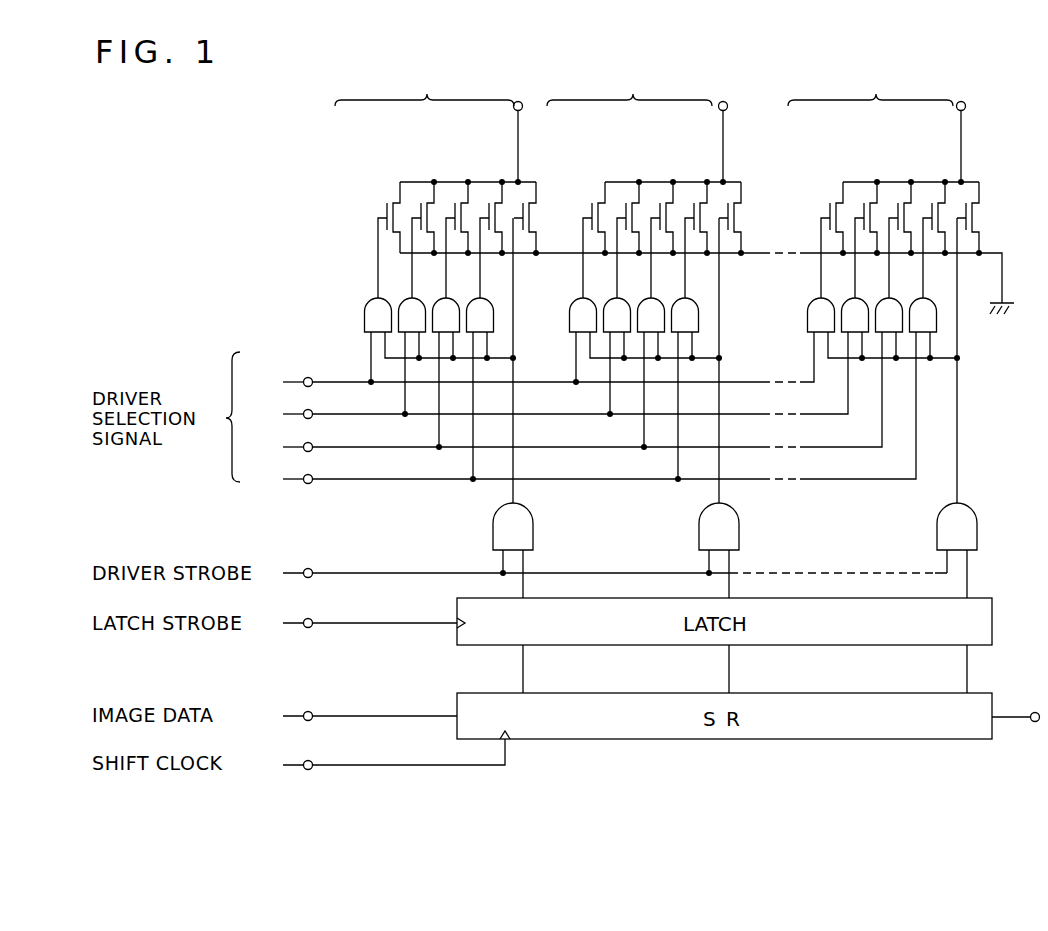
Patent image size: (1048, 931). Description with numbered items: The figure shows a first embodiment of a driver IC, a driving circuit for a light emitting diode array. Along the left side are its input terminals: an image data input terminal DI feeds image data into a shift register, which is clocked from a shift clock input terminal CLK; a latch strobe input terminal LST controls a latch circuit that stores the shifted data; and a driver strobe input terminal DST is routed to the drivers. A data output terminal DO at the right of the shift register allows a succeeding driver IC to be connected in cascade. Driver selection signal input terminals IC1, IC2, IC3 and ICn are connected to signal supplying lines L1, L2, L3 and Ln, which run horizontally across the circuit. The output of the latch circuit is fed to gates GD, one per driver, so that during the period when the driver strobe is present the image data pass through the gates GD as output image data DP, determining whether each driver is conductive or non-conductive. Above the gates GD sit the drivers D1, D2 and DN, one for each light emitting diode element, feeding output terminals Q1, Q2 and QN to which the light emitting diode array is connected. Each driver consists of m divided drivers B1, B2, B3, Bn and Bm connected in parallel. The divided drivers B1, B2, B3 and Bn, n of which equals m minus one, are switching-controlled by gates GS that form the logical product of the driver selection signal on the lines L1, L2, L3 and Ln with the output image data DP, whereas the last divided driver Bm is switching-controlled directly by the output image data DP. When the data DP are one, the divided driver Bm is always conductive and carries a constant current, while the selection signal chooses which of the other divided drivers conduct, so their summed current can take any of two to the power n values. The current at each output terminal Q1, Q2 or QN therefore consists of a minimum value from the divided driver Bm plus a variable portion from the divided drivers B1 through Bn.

The driver D1 is at (435, 124).
The driver D2 is at (644, 124).
The driver DN is at (883, 124).
The output terminal Q1 is at (519, 101).
The output terminal Q2 is at (724, 101).
The output terminal QN is at (962, 101).
The divided driver B1 is at (836, 198).
The divided driver B2 is at (870, 198).
The divided driver B3 is at (904, 198).
The divided driver Bn is at (938, 198).
The divided driver Bm is at (972, 198).
The gate GS is at (365, 316).
The gate GD is at (493, 532).
The output image data DP is at (515, 492).
The signal supplying line L1 is at (522, 382).
The signal supplying line L2 is at (531, 414).
The signal supplying line L3 is at (541, 447).
The signal supplying line Ln is at (549, 479).
The driver selection signal input terminal IC1 is at (304, 379).
The driver selection signal input terminal IC2 is at (304, 411).
The driver selection signal input terminal IC3 is at (304, 444).
The driver selection signal input terminal ICn is at (304, 476).
The driver strobe input terminal DST is at (307, 568).
The latch strobe input terminal LST is at (306, 628).
The image data input terminal DI is at (308, 711).
The shift clock input terminal CLK is at (308, 770).
The data output terminal DO is at (1035, 712).